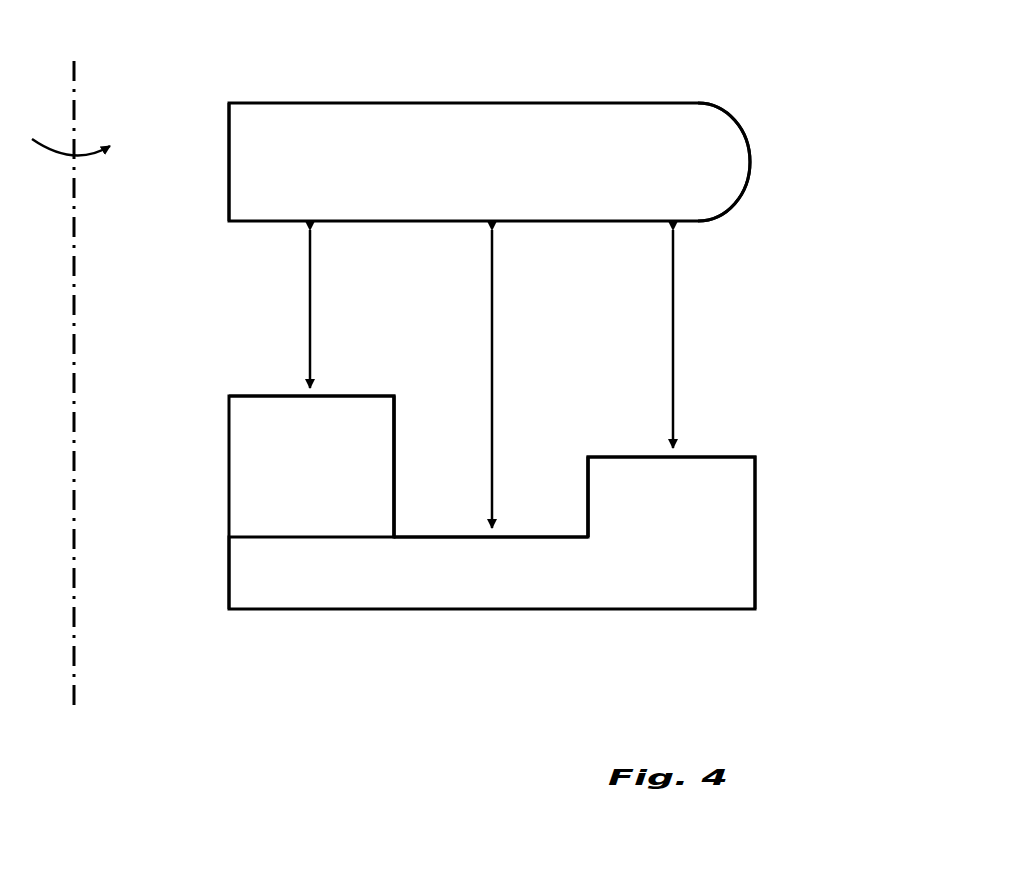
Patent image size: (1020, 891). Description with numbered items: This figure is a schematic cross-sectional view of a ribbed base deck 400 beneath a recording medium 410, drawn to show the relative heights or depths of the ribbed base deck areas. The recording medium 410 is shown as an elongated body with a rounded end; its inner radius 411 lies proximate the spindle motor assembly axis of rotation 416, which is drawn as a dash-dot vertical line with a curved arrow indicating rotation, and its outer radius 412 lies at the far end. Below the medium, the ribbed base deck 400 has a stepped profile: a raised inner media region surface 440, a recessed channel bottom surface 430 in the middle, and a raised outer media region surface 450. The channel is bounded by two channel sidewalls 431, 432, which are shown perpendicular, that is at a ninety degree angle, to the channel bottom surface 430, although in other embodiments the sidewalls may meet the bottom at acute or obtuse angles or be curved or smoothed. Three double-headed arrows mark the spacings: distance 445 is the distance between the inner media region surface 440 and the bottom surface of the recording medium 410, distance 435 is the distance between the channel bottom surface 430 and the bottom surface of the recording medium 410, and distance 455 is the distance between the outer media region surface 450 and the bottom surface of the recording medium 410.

The ribbed base deck 400 is at (780, 592).
The recording medium 410 is at (732, 106).
The inner radius 411 is at (229, 122).
The outer radius 412 is at (750, 160).
The spindle motor assembly axis of rotation 416 is at (74, 78).
The channel bottom surface 430 is at (532, 535).
The channel sidewall 431 is at (394, 432).
The channel sidewall 432 is at (588, 485).
The distance 435 is at (492, 300).
The inner media region surface 440 is at (370, 396).
The distance 445 is at (310, 318).
The outer media region surface 450 is at (716, 458).
The distance 455 is at (673, 372).